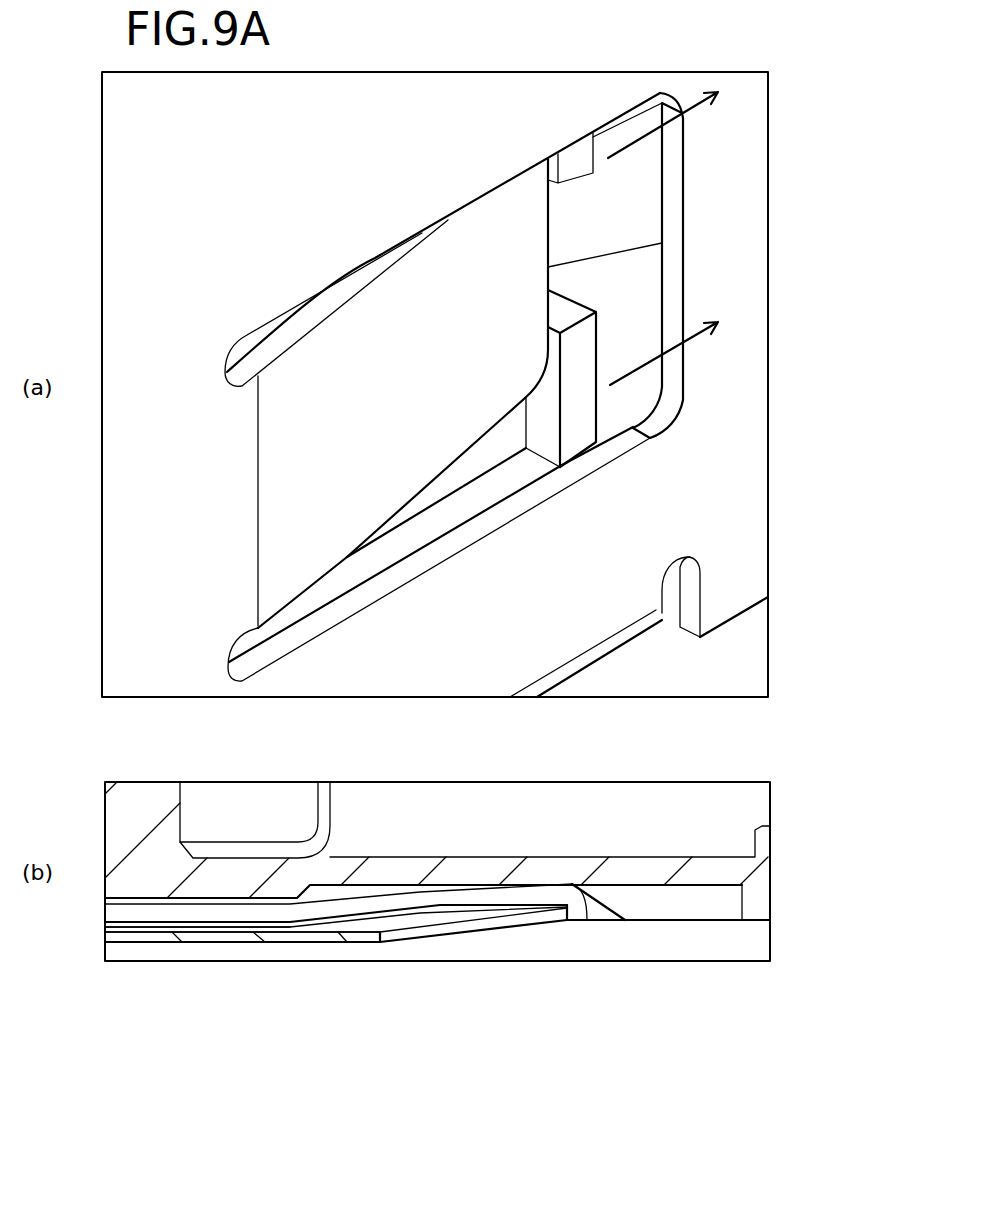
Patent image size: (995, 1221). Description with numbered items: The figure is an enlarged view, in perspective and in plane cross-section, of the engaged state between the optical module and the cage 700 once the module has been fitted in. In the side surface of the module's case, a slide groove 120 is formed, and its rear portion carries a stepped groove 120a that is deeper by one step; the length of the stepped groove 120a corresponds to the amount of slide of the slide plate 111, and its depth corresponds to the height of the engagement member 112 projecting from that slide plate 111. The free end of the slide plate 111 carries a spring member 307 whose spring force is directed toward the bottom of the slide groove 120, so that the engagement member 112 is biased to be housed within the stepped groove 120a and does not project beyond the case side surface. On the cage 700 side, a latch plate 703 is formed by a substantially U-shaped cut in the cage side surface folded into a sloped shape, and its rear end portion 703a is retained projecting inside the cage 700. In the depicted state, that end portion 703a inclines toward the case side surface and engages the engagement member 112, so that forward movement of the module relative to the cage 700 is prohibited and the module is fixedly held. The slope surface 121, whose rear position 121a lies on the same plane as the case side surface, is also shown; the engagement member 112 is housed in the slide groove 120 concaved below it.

The engagement member 112 is at (573, 155).
The slope surface 121 is at (617, 205).
The rear position of the slope surface 121a is at (703, 920).
The latch plate 703 is at (380, 333).
The rear end portion of the latch plate 703a is at (548, 228).
The spring member 307 is at (370, 903).
The slide groove 120 is at (225, 898).
The stepped groove 120a is at (650, 883).
The slide plate 111 is at (122, 914).
The cage 700 is at (210, 943).